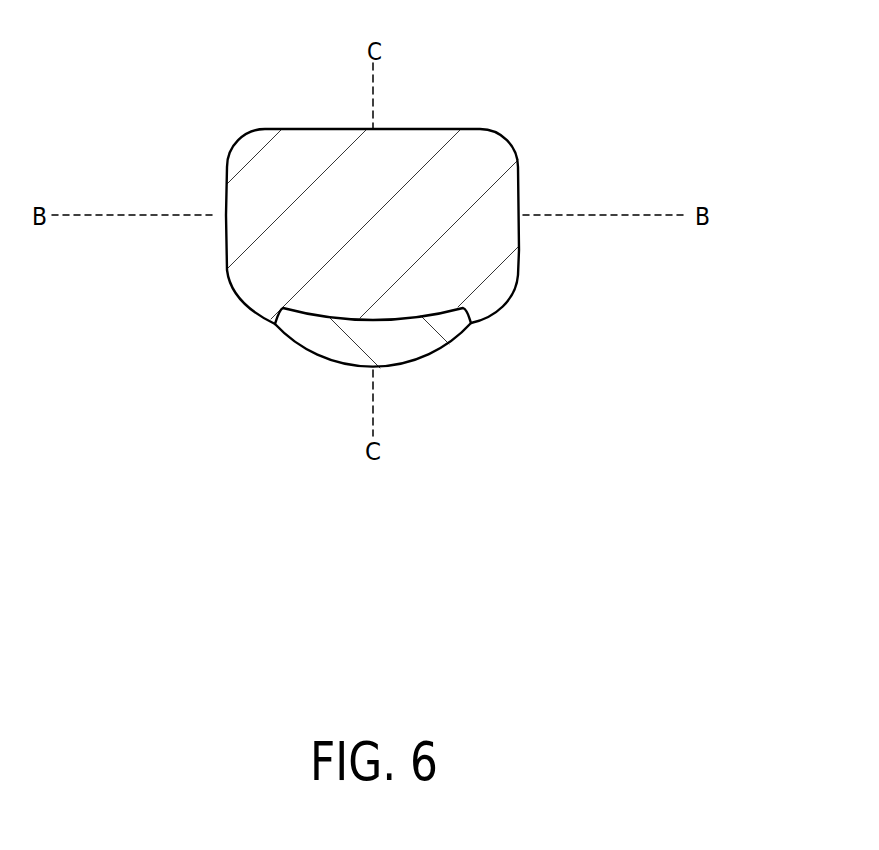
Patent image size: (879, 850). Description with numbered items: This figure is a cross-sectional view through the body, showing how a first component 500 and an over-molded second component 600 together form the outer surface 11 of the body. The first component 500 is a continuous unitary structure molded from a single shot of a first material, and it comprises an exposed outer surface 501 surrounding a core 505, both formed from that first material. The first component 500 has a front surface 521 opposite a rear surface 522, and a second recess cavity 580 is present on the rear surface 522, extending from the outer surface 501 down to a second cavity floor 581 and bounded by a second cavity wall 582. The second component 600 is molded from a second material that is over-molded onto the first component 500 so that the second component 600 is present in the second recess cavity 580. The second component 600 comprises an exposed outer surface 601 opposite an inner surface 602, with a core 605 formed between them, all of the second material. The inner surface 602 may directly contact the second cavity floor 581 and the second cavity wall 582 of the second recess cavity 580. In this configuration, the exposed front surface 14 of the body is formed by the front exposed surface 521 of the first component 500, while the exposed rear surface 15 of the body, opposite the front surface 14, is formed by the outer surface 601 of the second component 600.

The first component 500 is at (472, 163).
The outer surface 501 is at (468, 128).
The core 505 is at (318, 225).
The outer surface 11 is at (435, 128).
The front surface 14 is at (327, 128).
The front surface 521 is at (288, 128).
The rear surface 522 is at (260, 308).
The second recess cavity 580 is at (381, 322).
The second cavity floor 581 is at (403, 322).
The second cavity wall 582 is at (465, 318).
The second component 600 is at (330, 340).
The outer surface 601 is at (360, 368).
The inner surface 602 is at (434, 318).
The core 605 is at (356, 332).
The rear surface 15 is at (431, 350).